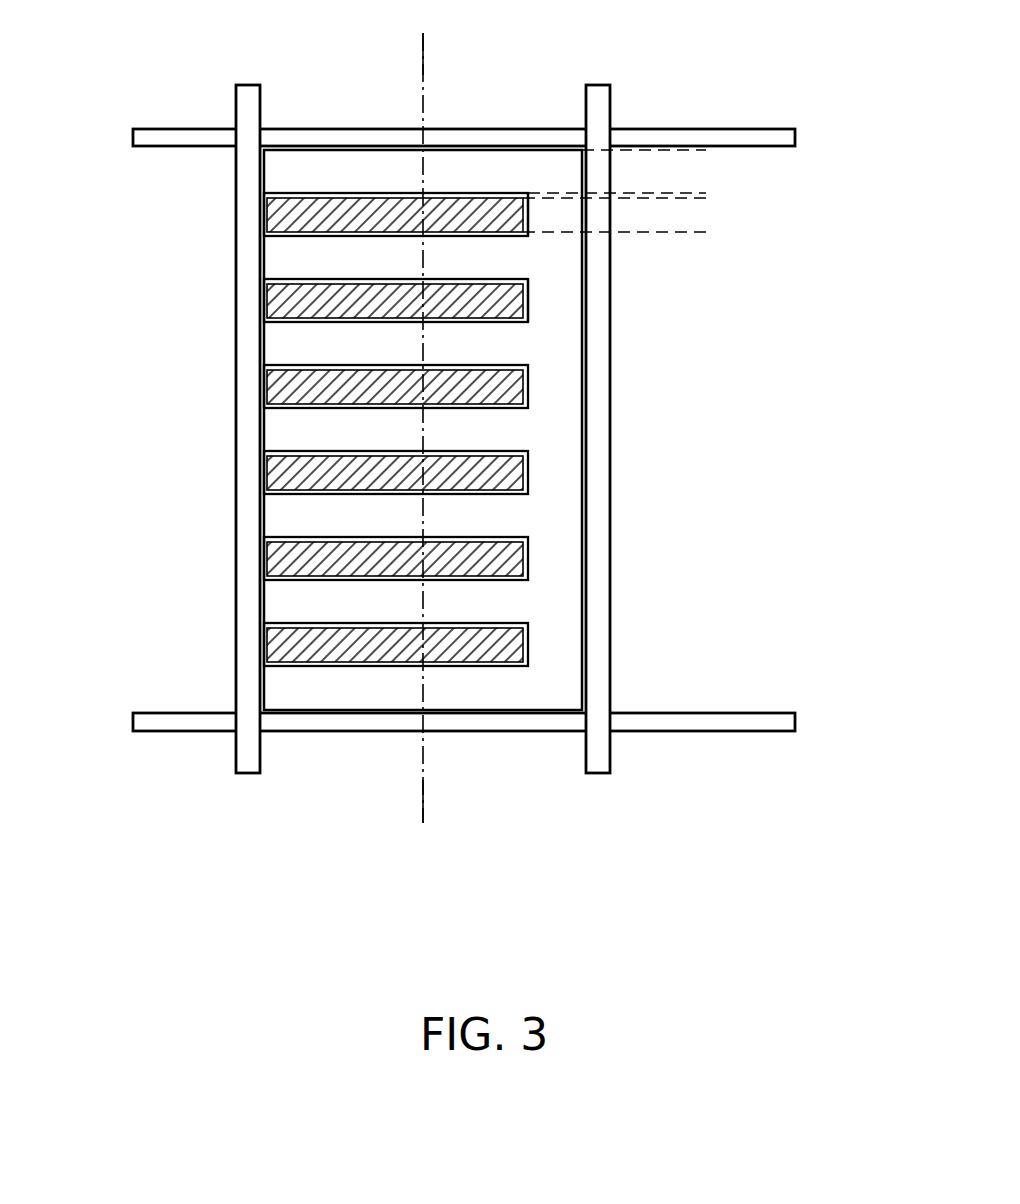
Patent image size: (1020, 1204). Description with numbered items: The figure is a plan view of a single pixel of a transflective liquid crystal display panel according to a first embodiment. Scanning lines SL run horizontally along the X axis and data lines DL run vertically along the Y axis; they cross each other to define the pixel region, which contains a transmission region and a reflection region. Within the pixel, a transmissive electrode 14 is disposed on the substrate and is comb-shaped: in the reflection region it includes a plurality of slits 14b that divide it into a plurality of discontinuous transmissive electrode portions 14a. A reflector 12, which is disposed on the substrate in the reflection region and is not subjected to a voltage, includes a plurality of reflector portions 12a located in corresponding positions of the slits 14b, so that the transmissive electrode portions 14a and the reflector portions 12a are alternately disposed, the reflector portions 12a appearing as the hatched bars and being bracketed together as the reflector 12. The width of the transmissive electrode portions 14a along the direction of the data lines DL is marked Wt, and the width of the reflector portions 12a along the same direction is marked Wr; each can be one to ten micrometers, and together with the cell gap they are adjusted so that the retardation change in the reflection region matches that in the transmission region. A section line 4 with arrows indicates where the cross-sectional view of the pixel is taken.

The reflector 12 is at (310, 430).
The reflector portions 12a is at (283, 213).
The transmissive electrode 14 is at (485, 366).
The transmissive electrode portions 14a is at (305, 255).
The slits 14b is at (515, 238).
The data lines DL is at (250, 93).
The scanning lines SL is at (797, 137).
The line 4- 4 is at (515, 52).
The width of the transmissive electrode portions Wt is at (703, 152).
The width of the reflector portions Wr is at (703, 200).